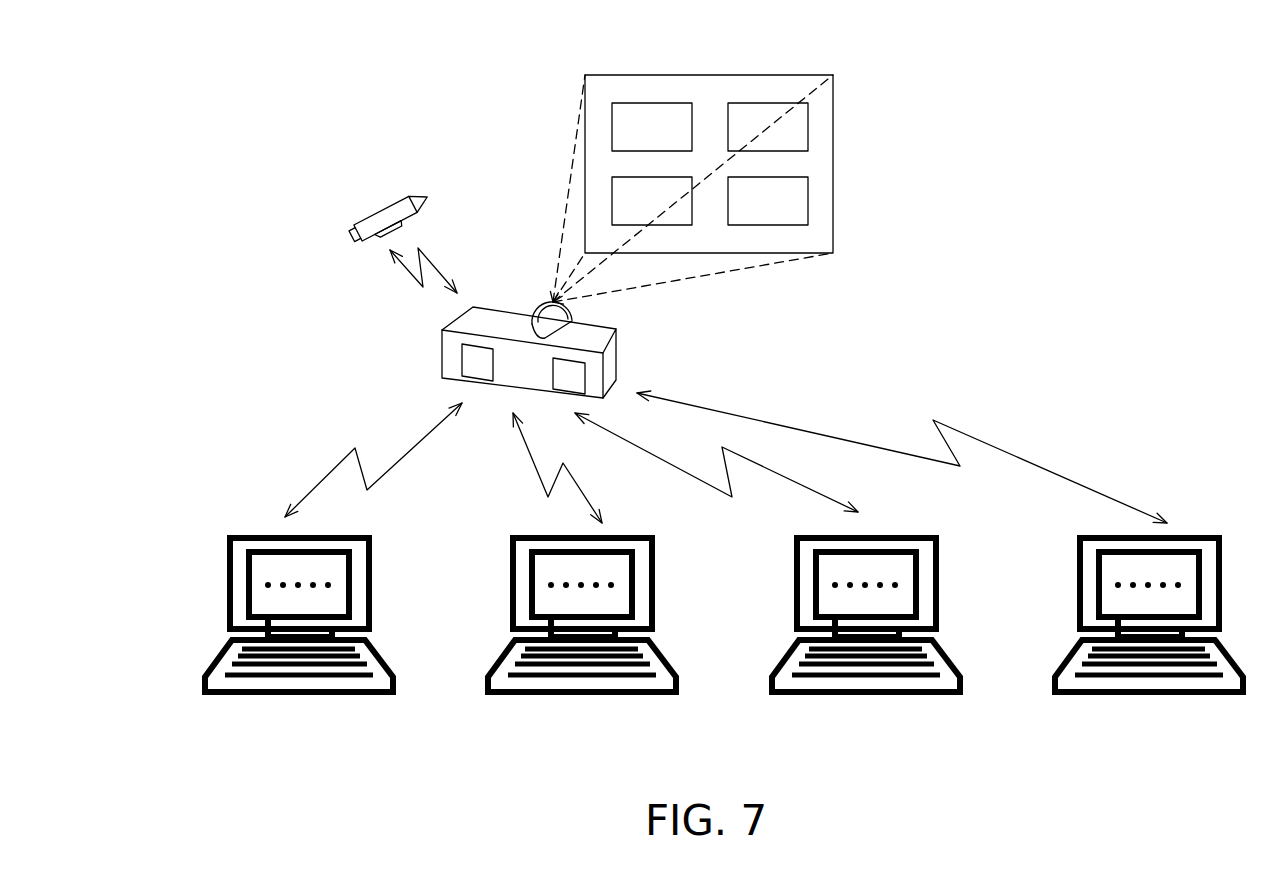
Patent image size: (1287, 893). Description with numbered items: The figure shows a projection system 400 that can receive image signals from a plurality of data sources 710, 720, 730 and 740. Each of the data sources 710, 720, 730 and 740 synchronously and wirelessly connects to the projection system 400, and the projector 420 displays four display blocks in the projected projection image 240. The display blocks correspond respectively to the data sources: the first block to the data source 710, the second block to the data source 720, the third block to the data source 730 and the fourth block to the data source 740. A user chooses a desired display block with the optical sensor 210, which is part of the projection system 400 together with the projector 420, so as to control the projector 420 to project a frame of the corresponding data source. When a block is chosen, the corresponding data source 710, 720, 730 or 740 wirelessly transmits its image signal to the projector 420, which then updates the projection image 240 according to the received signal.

The optical sensor 210 is at (383, 222).
The projection image 240 is at (833, 175).
The projection system 400 is at (340, 163).
The projector 420 is at (452, 352).
The data source 710 is at (372, 585).
The data source 720 is at (597, 638).
The data source 730 is at (881, 638).
The data source 740 is at (1164, 638).